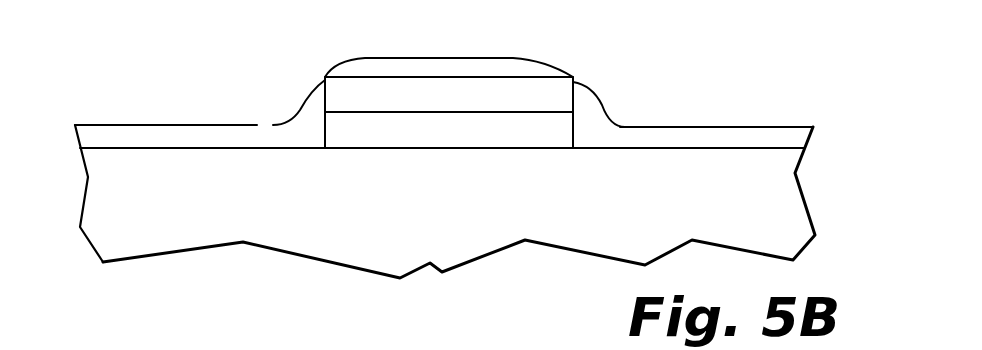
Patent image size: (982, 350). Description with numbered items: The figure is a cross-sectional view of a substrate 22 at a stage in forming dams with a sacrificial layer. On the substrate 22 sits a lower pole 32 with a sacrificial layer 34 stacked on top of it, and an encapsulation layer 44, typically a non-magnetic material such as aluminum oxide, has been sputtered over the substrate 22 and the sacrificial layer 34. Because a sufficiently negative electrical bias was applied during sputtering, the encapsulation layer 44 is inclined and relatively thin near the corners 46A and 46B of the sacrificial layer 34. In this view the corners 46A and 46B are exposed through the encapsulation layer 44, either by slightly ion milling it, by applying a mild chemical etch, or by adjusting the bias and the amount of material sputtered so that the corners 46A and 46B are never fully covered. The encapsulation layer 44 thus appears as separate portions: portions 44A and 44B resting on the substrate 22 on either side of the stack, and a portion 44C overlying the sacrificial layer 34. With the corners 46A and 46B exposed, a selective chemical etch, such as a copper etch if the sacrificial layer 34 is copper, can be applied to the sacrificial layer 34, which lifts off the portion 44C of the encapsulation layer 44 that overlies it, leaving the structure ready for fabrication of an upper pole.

The substrate 22 is at (758, 172).
The lower pole 32 is at (553, 127).
The sacrificial layer 34 is at (452, 97).
The encapsulation layer 44 is at (444, 70).
The portion of encapsulation layer 44A is at (148, 140).
The portion of encapsulation layer 44B is at (722, 126).
The portion of encapsulation layer 44C is at (513, 57).
The corner 46A is at (325, 77).
The corner 46B is at (573, 77).